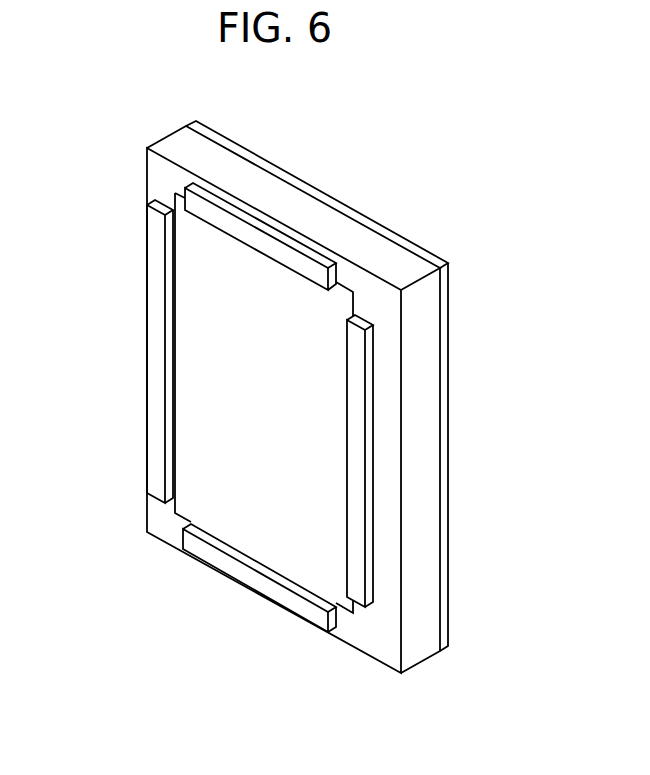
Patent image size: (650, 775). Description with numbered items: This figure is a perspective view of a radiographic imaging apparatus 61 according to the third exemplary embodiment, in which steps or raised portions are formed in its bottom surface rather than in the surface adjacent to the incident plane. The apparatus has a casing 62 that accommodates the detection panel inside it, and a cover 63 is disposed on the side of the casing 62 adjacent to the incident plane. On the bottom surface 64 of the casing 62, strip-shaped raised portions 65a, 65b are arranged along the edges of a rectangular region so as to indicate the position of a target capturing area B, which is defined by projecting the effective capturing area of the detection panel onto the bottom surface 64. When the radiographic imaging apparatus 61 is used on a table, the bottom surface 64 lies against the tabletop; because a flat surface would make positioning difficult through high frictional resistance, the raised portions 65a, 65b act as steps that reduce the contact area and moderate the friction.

The radiographic imaging apparatus 61 is at (291, 378).
The casing 62 is at (178, 142).
The cover 63 is at (230, 142).
The bottom surface 64 is at (153, 164).
The strip-shaped raised portions 65a is at (155, 354).
The strip-shaped raised portions 65b is at (312, 268).
The target capturing area B is at (351, 290).